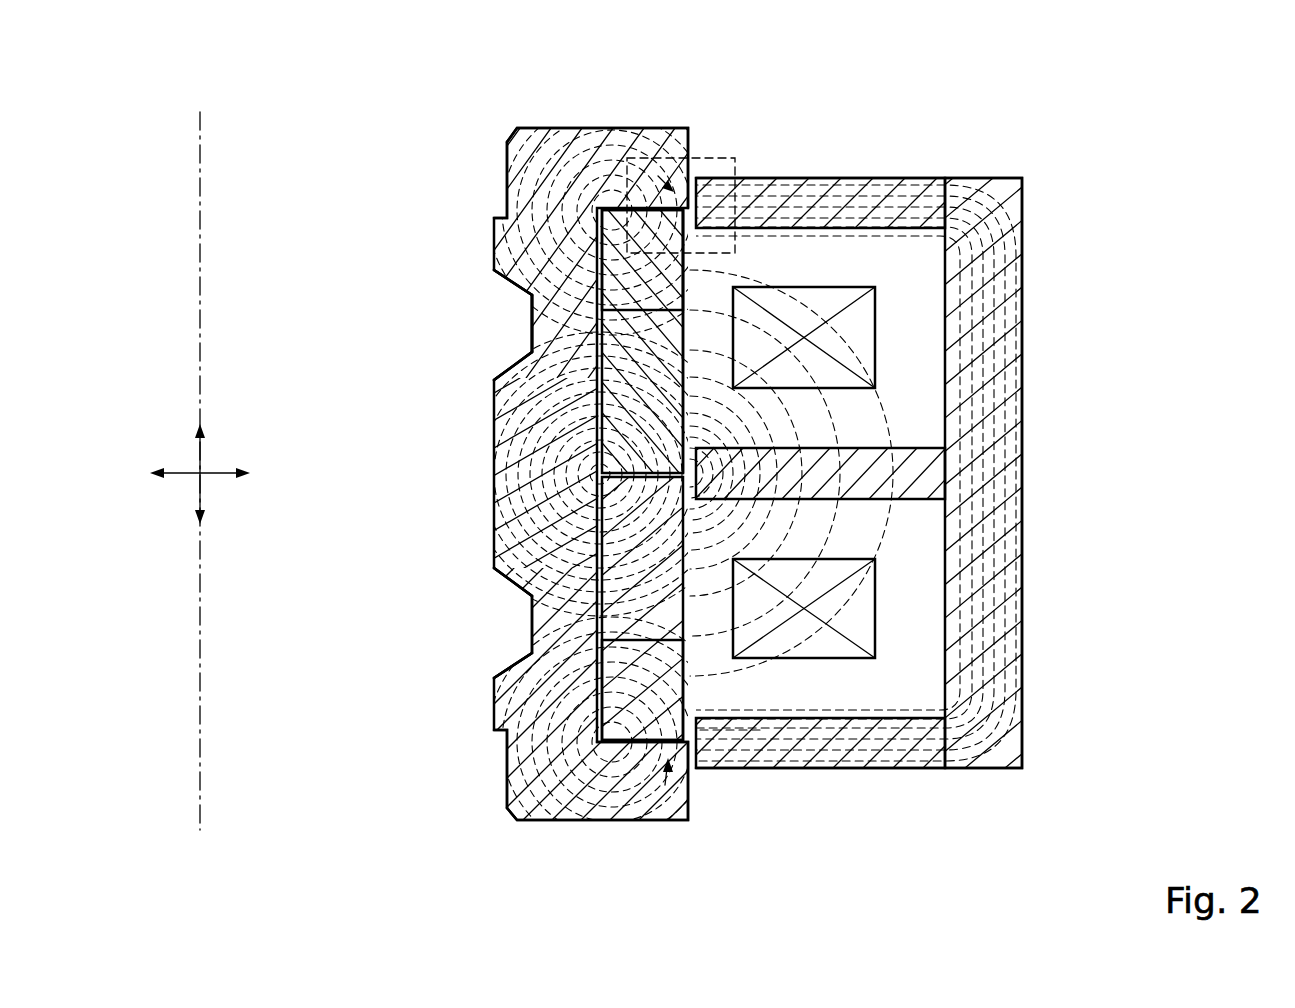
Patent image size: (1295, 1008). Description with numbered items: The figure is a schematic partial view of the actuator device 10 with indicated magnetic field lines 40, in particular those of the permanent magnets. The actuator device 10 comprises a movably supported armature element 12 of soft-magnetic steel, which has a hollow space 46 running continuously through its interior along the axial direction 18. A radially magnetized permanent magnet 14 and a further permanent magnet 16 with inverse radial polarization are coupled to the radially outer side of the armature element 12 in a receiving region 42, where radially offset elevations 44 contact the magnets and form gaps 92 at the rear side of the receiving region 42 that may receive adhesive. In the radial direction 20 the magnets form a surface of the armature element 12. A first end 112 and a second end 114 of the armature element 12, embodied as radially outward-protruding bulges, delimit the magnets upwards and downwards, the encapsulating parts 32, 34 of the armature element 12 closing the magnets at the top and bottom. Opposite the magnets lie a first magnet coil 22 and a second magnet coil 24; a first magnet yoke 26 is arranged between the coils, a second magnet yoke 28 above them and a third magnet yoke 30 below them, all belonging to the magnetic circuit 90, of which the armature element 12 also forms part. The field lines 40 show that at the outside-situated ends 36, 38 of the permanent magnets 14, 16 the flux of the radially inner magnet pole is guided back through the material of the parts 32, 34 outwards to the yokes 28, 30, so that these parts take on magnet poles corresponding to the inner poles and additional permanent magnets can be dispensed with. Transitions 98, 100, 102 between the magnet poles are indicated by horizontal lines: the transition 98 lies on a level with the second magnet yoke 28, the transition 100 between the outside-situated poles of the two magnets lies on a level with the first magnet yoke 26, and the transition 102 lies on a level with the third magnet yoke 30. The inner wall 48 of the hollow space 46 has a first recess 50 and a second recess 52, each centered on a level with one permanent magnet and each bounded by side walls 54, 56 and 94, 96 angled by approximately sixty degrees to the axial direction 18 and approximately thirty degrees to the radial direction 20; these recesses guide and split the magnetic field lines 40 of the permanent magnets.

The actuator device 10 is at (840, 98).
The armature element 12 is at (497, 510).
The permanent magnet 14 is at (530, 320).
The further permanent magnet 16 is at (560, 815).
The axial direction 18 is at (200, 500).
The radial direction 20 is at (177, 472).
The first magnet coil 22 is at (855, 340).
The second magnet coil 24 is at (803, 645).
The first magnet yoke 26 is at (930, 468).
The second magnet yoke 28 is at (905, 200).
The third magnet yoke 30 is at (917, 747).
The part of the armature element 32 is at (637, 150).
The part of the armature element 34 is at (625, 775).
The end of the permanent magnet 36 is at (677, 153).
The end of the further permanent magnet 38 is at (610, 722).
The magnetic field lines 40 is at (562, 145).
The receiving region 42 is at (618, 397).
The radially offset elevations 44 is at (680, 300).
The hollow space 46 is at (222, 280).
The inner wall 48 is at (532, 323).
The first recess 50 is at (504, 300).
The second recess 52 is at (504, 638).
The side wall 54 is at (497, 280).
The side wall 56 is at (513, 357).
The magnetic circuit 90 is at (1030, 215).
The gaps 92 is at (588, 632).
The side wall 94 is at (512, 587).
The side wall 96 is at (512, 657).
The transition 98 is at (795, 178).
The transition 100 is at (777, 472).
The transition 102 is at (733, 745).
The first end of the armature element 112 is at (672, 172).
The second end of the armature element 114 is at (680, 790).